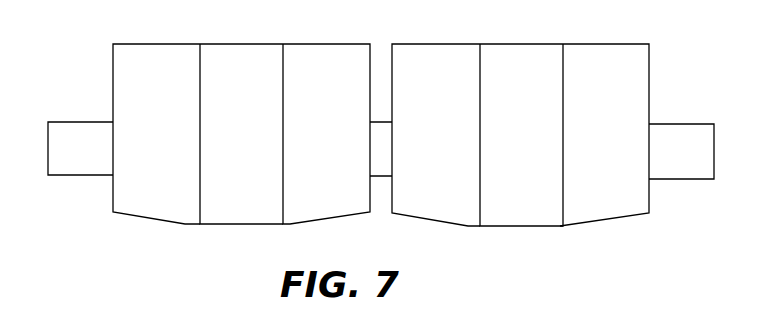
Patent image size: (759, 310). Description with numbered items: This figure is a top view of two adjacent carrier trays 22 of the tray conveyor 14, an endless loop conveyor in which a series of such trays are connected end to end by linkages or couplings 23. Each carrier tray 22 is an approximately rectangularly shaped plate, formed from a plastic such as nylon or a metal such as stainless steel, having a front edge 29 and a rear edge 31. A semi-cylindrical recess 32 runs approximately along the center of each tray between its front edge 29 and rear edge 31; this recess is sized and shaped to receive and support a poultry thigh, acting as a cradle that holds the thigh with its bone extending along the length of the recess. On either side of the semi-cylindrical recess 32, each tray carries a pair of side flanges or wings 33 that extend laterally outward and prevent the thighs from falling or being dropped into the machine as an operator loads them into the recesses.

The tray conveyor 14 is at (376, 146).
The carrier tray 22 is at (398, 146).
The coupling 23 is at (684, 124).
The front edge 29 is at (155, 219).
The rear edge 31 is at (326, 44).
The semi-cylindrical recess 32 is at (238, 72).
The side flanges or wings 33 is at (430, 210).